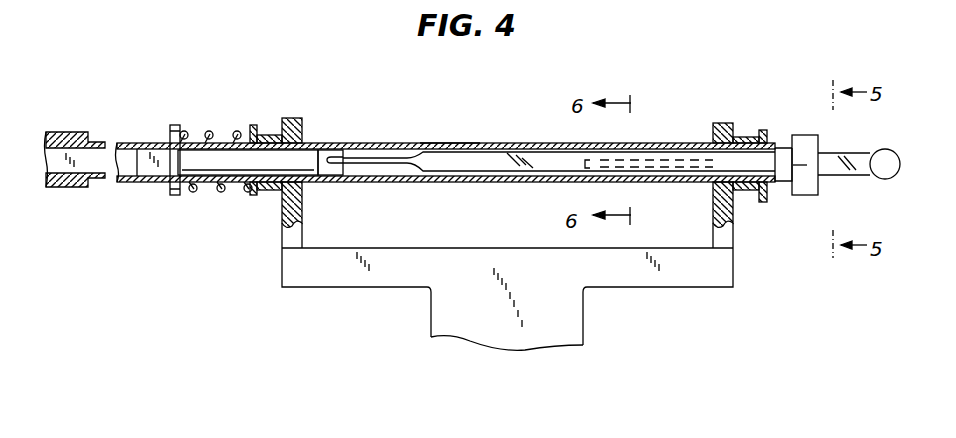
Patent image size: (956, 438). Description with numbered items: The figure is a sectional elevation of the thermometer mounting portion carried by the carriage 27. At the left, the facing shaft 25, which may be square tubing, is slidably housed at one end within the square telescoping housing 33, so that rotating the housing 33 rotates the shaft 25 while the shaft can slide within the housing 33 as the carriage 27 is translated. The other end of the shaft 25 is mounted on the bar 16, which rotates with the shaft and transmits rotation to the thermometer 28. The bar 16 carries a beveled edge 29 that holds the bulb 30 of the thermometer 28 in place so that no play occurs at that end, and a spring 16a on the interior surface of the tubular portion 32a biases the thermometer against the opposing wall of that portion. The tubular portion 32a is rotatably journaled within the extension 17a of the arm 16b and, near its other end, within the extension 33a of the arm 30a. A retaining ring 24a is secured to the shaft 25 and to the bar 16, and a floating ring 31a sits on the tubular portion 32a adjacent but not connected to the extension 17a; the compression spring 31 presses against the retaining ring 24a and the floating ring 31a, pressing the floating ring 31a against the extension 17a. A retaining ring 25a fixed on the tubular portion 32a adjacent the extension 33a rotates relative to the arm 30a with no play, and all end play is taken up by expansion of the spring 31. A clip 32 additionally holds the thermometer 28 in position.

The housing 33 is at (100, 131).
The facing shaft 25 is at (128, 141).
The retaining ring 24a is at (174, 126).
The spring 31 is at (191, 192).
The floating ring 31a is at (254, 125).
The extension 17a is at (270, 191).
The arm 16b is at (291, 118).
The bar 16 is at (300, 160).
The beveled edge 29 is at (329, 176).
The bulb 30 is at (373, 160).
The tubular portion 32a is at (445, 146).
The thermometer 28 is at (535, 163).
The spring 16a is at (658, 160).
The arm 30a is at (722, 123).
The retaining ring 25a is at (765, 130).
The extension 33a is at (763, 130).
The clip 32 is at (810, 142).
The carriage 27 is at (703, 288).